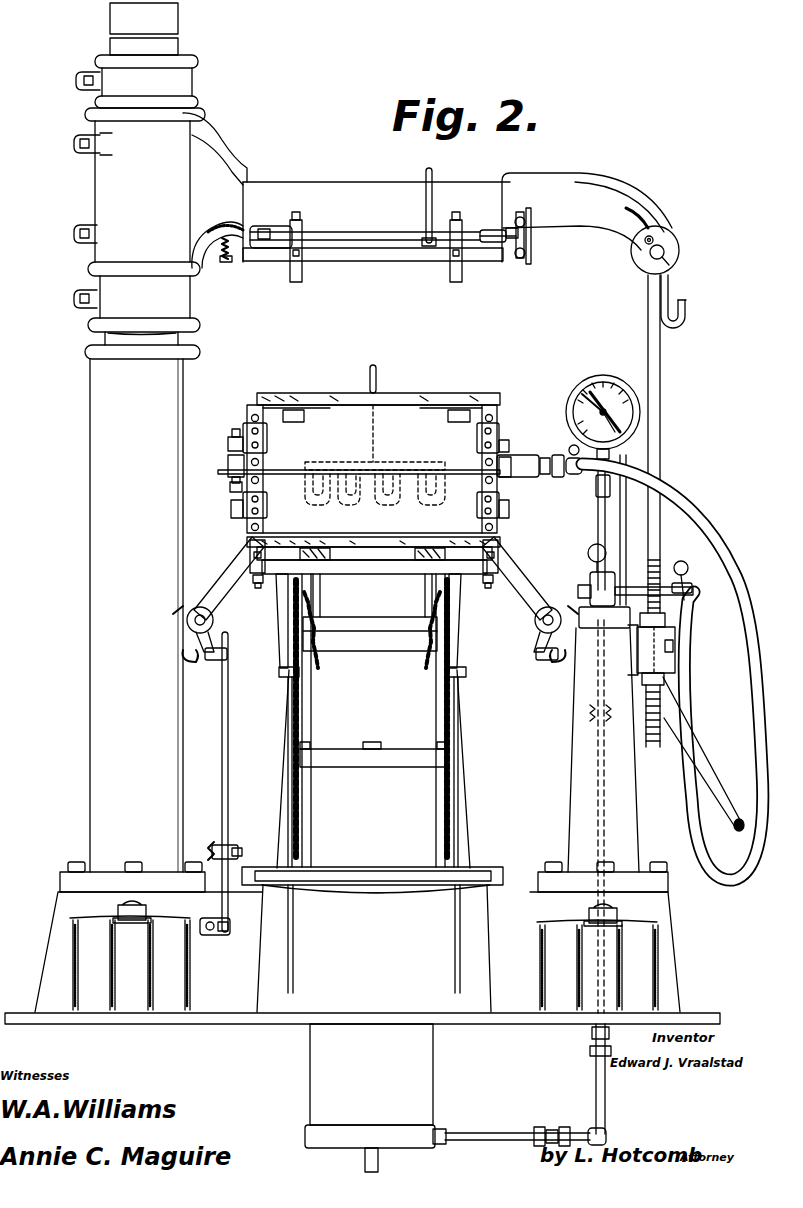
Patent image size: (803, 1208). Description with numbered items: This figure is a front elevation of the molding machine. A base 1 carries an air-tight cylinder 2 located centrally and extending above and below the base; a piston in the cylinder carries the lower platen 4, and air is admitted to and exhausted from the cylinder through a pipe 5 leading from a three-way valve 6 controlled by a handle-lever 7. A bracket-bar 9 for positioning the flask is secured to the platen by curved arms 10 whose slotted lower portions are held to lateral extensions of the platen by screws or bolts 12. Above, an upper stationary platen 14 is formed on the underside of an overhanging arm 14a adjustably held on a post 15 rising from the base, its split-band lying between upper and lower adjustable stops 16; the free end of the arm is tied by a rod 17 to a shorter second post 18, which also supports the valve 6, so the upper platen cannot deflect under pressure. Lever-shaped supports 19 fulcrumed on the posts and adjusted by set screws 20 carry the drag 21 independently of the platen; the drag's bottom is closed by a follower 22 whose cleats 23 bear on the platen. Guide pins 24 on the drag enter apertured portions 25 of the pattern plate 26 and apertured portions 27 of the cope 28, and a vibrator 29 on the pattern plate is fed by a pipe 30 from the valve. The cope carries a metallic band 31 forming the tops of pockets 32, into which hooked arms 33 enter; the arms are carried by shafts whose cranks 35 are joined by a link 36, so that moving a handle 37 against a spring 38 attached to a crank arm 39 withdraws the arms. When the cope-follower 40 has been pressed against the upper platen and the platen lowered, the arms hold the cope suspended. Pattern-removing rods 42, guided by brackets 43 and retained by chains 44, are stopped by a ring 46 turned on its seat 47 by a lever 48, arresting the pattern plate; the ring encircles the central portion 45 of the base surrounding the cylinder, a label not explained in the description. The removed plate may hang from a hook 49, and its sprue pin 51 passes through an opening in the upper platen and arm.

The base 1 is at (510, 1025).
The air-tight cylinder 2 is at (433, 1092).
The platen 4 is at (385, 568).
The pipe 5 is at (596, 806).
The three-way valve 6 is at (590, 585).
The handle-lever 7 is at (630, 515).
The bracket-bar 9 is at (231, 512).
The curved arms 10 is at (250, 554).
The screws or bolts 12 is at (257, 583).
The upper stationary platen 14 is at (372, 259).
The overhanging arm 14a is at (315, 186).
The post 15 is at (178, 402).
The adjustable stops 16 is at (190, 95).
The rod 17 is at (660, 452).
The second post 18 is at (574, 744).
The supports 19 is at (226, 570).
The set screws 20 is at (229, 663).
The drag 21 is at (412, 490).
The follower 22 is at (365, 548).
The cleats 23 is at (310, 549).
The guide pins 24 is at (500, 441).
The apertured portions 25 is at (229, 465).
The pattern plate 26 is at (268, 472).
The apertured portions 27 is at (230, 443).
The cope 28 is at (499, 419).
The vibrator 29 is at (542, 472).
The pipe 30 is at (700, 516).
The metallic band 31 is at (322, 406).
The pockets 32 is at (292, 410).
The hooked arms 33 is at (294, 283).
The cranks 35 is at (525, 218).
The link 36 is at (531, 247).
The handle 37 is at (433, 180).
The spring 38 is at (222, 233).
The crank arm 39 is at (231, 260).
The cope-follower 40 is at (415, 397).
The rods 42 is at (293, 748).
The brackets 43 is at (282, 660).
The chains 44 is at (308, 820).
The central pedestal 45 is at (365, 986).
The ring 46 is at (380, 886).
The seat 47 is at (218, 1006).
The lever 48 is at (236, 811).
The hook 49 is at (690, 314).
The sprue pin 51 is at (380, 382).